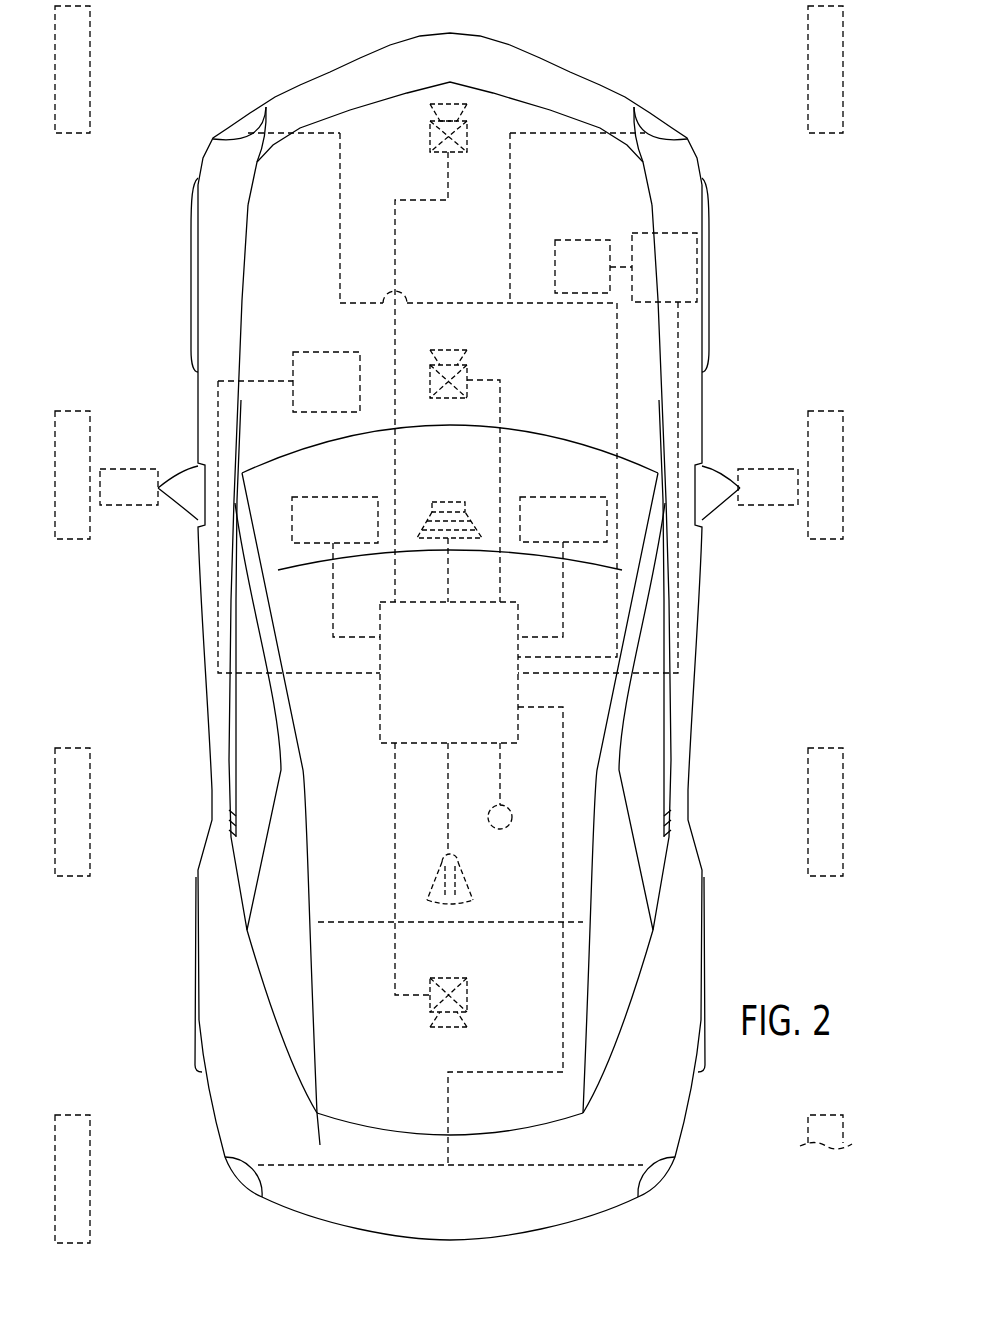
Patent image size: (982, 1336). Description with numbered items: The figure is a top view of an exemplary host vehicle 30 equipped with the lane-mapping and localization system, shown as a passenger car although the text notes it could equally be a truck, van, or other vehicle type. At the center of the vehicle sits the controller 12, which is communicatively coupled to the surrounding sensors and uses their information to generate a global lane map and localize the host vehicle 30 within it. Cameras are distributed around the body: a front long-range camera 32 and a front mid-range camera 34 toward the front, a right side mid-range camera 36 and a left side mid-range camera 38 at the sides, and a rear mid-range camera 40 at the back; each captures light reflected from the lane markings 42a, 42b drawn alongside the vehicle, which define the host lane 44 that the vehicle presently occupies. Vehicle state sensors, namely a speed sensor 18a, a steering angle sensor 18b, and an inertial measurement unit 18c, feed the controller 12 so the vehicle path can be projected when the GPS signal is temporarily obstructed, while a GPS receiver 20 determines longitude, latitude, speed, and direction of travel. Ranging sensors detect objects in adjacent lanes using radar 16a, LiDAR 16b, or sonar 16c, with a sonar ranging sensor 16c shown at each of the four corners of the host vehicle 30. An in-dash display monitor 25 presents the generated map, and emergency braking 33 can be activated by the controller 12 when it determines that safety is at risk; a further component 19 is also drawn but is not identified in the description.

The controller 12 is at (465, 688).
The radar 16a is at (238, 117).
The LiDAR 16b is at (513, 811).
The sonar ranging sensor 16c is at (455, 648).
The speed sensor 18a is at (565, 238).
The steering angle sensor 18b is at (700, 273).
The Inertial Measure Unit (IMU) 18c is at (318, 352).
The speaker 19 is at (457, 502).
The GPS receiver 20 is at (473, 891).
The in-dash display monitor 25 is at (545, 497).
The host vehicle 30 is at (562, 58).
The front long-range camera 32 is at (467, 366).
The emergency braking 33 is at (358, 497).
The front mid-range camera 34 is at (430, 147).
The right side mid-range camera 36 is at (760, 468).
The left side mid-range camera 38 is at (132, 468).
The rear mid-range camera 40 is at (467, 997).
The lane marking 42a is at (90, 43).
The lane marking 42b is at (806, 41).
The host lane 44 is at (160, 196).